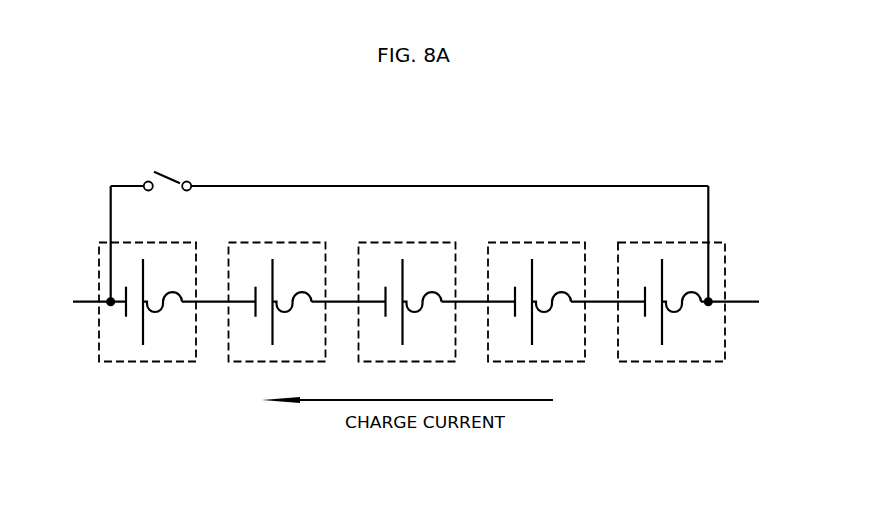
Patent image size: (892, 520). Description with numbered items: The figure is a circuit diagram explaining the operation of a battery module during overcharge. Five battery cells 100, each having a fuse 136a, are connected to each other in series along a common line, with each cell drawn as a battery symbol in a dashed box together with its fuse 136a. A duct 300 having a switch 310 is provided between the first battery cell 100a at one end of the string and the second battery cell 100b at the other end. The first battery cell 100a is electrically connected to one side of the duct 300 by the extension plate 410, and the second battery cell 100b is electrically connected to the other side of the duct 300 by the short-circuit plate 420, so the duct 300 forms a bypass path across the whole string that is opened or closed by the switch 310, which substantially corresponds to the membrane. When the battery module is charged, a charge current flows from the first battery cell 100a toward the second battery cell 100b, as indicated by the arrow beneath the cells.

The duct 300 is at (448, 185).
The switch 310 is at (170, 177).
The extension plate 410 is at (711, 203).
The short-circuit plate 420 is at (106, 207).
The battery cells 100 is at (452, 365).
The first battery cell 100a is at (711, 341).
The second battery cell 100b is at (160, 353).
The fuse 136a is at (675, 311).